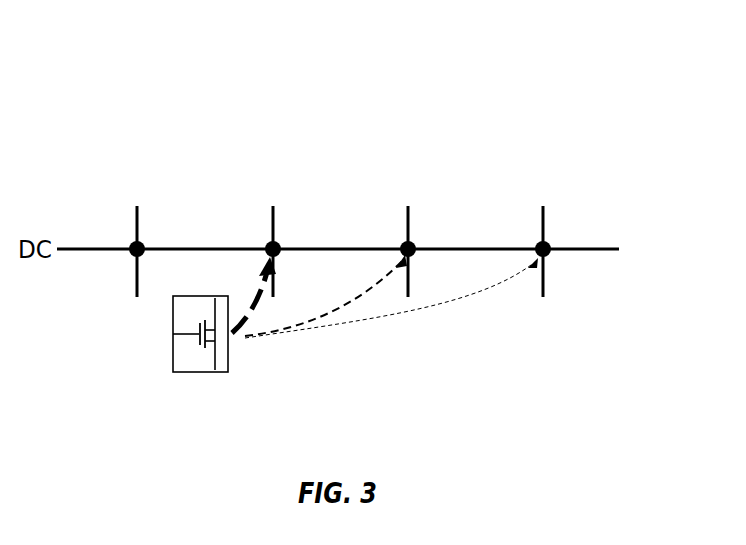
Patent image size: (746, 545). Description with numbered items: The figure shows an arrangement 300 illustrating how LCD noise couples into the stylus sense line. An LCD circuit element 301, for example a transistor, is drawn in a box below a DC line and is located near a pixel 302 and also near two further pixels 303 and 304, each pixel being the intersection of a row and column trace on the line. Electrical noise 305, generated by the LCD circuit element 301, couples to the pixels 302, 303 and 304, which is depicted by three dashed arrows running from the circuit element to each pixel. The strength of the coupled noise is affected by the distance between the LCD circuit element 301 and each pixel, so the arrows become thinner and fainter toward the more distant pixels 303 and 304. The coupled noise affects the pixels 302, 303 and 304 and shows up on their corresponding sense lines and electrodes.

The DC power distribution system 300 is at (610, 92).
The LCD circuit element 301 is at (172, 334).
The pixel 302 is at (272, 243).
The pixel 303 is at (407, 243).
The pixel 304 is at (542, 243).
The electrical noise 305 is at (317, 335).